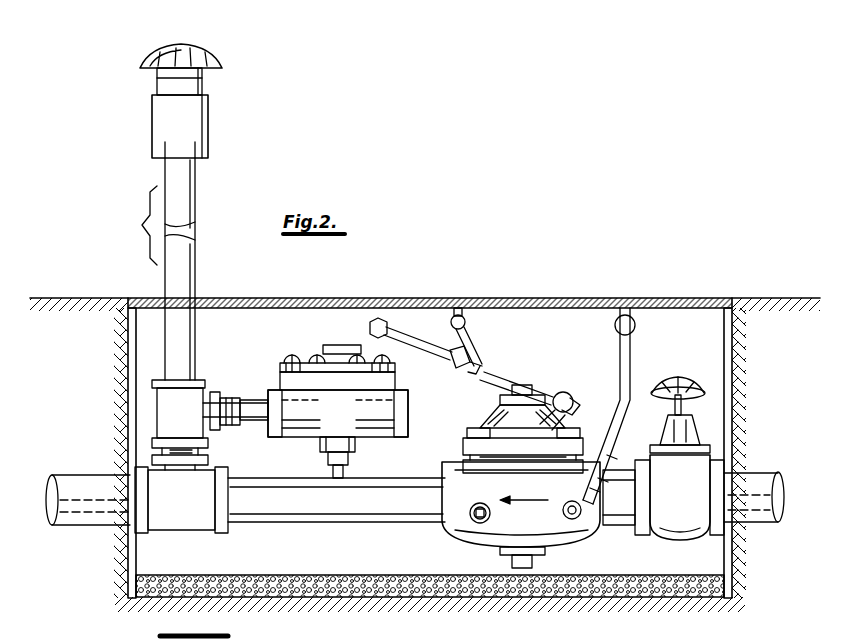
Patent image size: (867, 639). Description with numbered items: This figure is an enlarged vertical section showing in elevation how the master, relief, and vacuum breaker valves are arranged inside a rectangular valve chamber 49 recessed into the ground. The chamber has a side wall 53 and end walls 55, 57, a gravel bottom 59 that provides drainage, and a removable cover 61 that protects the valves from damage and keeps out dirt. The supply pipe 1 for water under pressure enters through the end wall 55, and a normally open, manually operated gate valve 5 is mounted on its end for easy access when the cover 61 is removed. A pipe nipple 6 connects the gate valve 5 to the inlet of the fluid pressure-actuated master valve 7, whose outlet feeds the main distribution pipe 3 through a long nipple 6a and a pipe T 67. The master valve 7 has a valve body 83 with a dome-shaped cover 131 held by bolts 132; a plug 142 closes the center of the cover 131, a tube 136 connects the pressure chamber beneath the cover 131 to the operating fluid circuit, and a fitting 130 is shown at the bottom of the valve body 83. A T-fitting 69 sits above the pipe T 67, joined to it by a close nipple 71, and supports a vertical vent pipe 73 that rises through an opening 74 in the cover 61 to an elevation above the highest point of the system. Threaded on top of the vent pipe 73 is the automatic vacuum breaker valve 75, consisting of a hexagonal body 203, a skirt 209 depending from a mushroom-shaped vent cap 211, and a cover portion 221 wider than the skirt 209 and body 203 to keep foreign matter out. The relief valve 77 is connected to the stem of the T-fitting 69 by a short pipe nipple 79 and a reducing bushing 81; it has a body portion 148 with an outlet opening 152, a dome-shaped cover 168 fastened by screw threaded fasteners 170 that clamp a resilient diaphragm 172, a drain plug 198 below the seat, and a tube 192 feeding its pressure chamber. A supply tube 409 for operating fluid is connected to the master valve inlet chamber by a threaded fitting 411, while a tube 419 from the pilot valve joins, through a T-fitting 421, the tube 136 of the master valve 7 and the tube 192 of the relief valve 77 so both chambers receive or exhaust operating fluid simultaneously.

The supply pipe 1 is at (766, 466).
The main distribution pipe 3 is at (72, 474).
The gate valve 5 is at (684, 522).
The pipe nipple 6 is at (616, 520).
The long nipple 6a is at (296, 522).
The master valve 7 is at (514, 515).
The valve chamber 49 is at (410, 308).
The side wall 53 is at (690, 312).
The end wall 55 is at (124, 352).
The end wall 57 is at (742, 330).
The gravel bottom 59 is at (392, 600).
The cover 61 is at (462, 298).
The pipe T 67 is at (190, 522).
The T-fitting 69 is at (196, 392).
The close nipple 71 is at (203, 445).
The vent pipe 73 is at (196, 224).
The opening 74 is at (210, 300).
The vacuum breaker valve 75 is at (175, 91).
The relief valve 77 is at (359, 375).
The pipe nipple 79 is at (248, 394).
The reducing bushing 81 is at (212, 408).
The valve body 83 is at (509, 512).
The drain plug 130 is at (545, 560).
The dome-shaped cover 131 is at (490, 418).
The bolts 132 is at (572, 410).
The tube 136 is at (566, 392).
The plug 142 is at (520, 384).
The body portion 148 is at (360, 444).
The outlet opening 152 is at (408, 420).
The dome-shaped cover 168 is at (340, 355).
The screw threaded fasteners 170 is at (356, 356).
The diaphragm 172 is at (396, 376).
The tube 192 is at (378, 318).
The drain plug 198 is at (340, 465).
The body 203 is at (152, 126).
The skirt 209 is at (202, 74).
The vent cap 211 is at (150, 47).
The cover portion 221 is at (214, 56).
The supply tube 409 is at (630, 352).
The threaded fitting 411 is at (568, 502).
The tube 419 is at (468, 338).
The T-fitting 421 is at (480, 354).